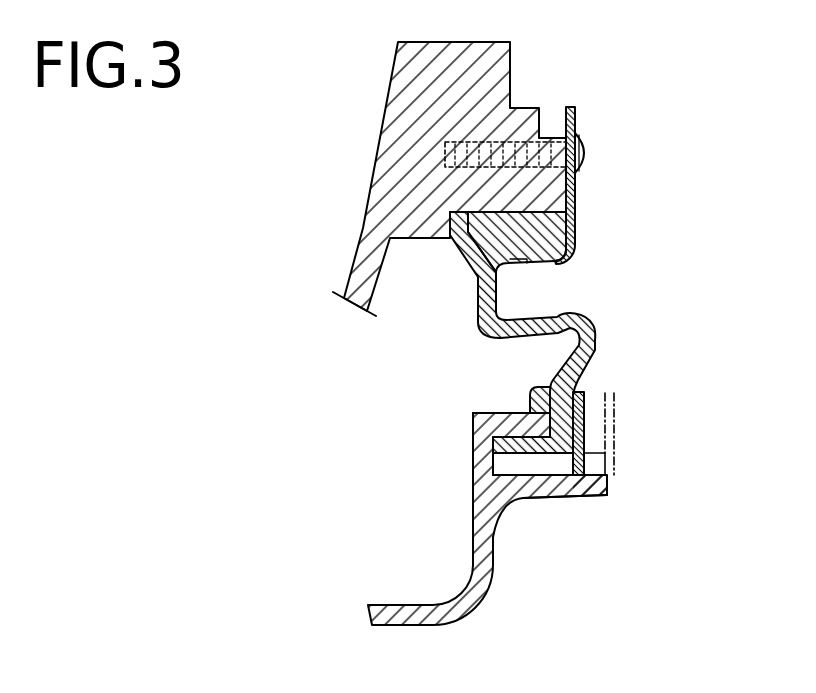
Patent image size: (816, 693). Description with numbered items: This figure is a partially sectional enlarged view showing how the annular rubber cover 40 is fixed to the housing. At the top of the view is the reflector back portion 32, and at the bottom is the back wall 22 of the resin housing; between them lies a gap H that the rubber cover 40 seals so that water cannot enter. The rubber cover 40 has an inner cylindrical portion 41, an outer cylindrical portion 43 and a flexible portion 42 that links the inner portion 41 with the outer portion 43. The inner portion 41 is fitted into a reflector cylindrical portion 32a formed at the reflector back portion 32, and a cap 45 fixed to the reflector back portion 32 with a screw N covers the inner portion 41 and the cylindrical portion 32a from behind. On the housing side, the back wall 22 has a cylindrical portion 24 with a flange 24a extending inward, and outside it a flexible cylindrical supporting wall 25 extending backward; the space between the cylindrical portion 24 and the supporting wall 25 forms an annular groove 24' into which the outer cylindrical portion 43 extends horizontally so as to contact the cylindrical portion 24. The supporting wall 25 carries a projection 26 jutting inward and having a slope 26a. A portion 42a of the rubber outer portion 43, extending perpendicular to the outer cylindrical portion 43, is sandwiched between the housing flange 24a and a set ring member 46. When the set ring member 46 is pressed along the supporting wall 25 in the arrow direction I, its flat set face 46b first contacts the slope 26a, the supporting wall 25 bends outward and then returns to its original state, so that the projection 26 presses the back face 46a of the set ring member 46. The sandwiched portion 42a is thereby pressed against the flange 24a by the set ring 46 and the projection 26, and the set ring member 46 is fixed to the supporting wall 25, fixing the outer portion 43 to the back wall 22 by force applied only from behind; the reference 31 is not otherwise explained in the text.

The back wall 22 is at (473, 489).
The cylindrical portion 24 is at (487, 498).
The flange 24a is at (553, 425).
The annular groove 24' is at (579, 555).
The supporting wall 25 is at (594, 497).
The projection 26 is at (606, 483).
The slope 26a is at (587, 452).
The housing 31 is at (352, 266).
The reflector back portion 32 is at (431, 42).
The reflector cylindrical portion 32a is at (458, 246).
The annular rubber cover 40 is at (504, 294).
The inner cylindrical portion 41 is at (556, 234).
The flexible portion 42 is at (593, 328).
The sandwiched portion 42a is at (580, 385).
The outer cylindrical portion 43 is at (508, 468).
The cap 45 is at (588, 147).
The set ring member 46 is at (604, 402).
The back face 46a is at (592, 431).
The flat set face 46b is at (612, 392).
The screw N is at (590, 158).
The gap H is at (550, 340).
The direction indicator I is at (497, 579).